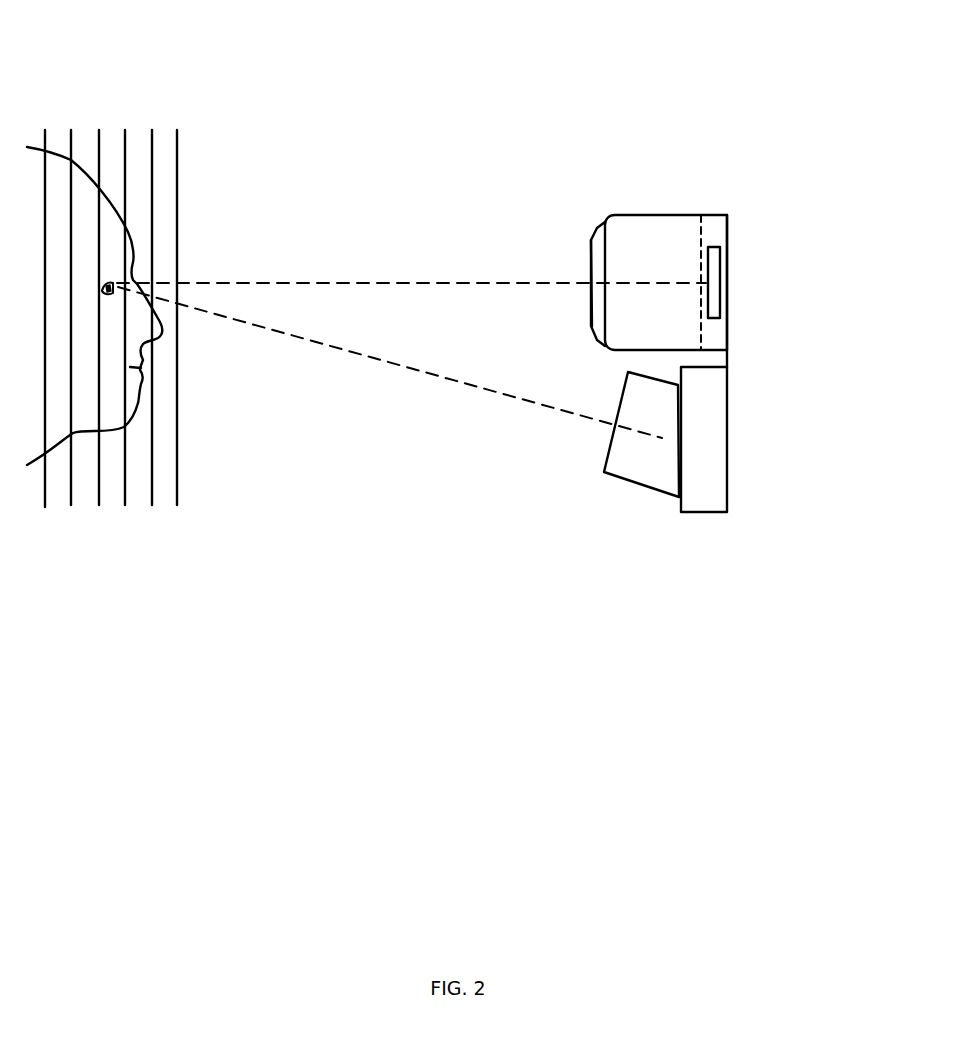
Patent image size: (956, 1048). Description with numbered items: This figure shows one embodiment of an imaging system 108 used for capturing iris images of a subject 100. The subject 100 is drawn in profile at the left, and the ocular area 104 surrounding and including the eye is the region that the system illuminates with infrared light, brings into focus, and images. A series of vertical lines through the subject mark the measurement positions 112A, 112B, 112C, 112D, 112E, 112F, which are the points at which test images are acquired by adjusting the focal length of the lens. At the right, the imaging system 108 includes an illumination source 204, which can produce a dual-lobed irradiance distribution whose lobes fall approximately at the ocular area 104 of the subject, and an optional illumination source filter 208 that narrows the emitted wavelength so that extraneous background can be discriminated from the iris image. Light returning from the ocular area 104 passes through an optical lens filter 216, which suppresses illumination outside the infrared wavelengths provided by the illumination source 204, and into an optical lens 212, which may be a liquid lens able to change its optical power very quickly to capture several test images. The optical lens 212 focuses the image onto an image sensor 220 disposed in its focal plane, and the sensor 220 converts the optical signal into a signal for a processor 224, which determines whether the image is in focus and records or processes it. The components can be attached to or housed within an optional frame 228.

The subject 100 is at (171, 378).
The ocular area 104 is at (110, 288).
The imaging system 108 is at (657, 425).
The measurement position 112A is at (177, 487).
The measurement position 112B is at (152, 490).
The measurement position 112C is at (125, 492).
The measurement position 112D is at (99, 492).
The measurement position 112E is at (71, 492).
The measurement position 112F is at (45, 492).
The illumination source 204 is at (708, 512).
The illumination source filter 208 is at (604, 472).
The optical lens 212 is at (610, 349).
The optical lens filter 216 is at (592, 237).
The image sensor 220 is at (703, 232).
The processor 224 is at (722, 280).
The frame 228 is at (727, 352).